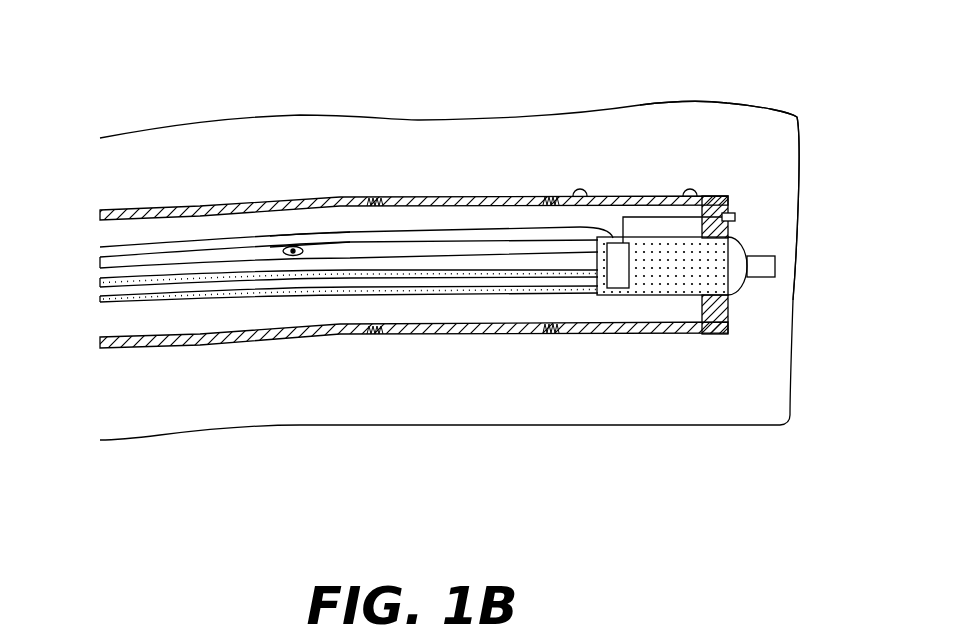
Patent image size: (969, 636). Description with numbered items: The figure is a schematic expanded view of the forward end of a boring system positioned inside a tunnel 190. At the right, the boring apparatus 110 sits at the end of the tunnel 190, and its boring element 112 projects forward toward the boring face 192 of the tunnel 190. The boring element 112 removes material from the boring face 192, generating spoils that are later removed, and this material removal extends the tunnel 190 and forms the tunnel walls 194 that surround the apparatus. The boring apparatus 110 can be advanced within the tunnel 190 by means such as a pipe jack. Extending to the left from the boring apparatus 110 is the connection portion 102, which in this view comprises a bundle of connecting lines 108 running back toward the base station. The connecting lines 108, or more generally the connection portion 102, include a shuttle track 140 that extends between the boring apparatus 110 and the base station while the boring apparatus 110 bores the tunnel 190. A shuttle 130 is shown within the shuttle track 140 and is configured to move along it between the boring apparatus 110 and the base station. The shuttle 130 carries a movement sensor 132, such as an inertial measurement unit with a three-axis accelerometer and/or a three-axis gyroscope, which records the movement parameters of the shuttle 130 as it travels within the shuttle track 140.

The connection portion 102 is at (559, 199).
The boring apparatus 110 is at (728, 196).
The movement sensor 132 is at (294, 246).
The tunnel walls 194 is at (737, 112).
The boring face 192 is at (786, 166).
The connecting lines 108 is at (79, 235).
The boring element 112 is at (776, 262).
The tunnel 190 is at (768, 371).
The shuttle 130 is at (285, 256).
The shuttle track 140 is at (311, 257).